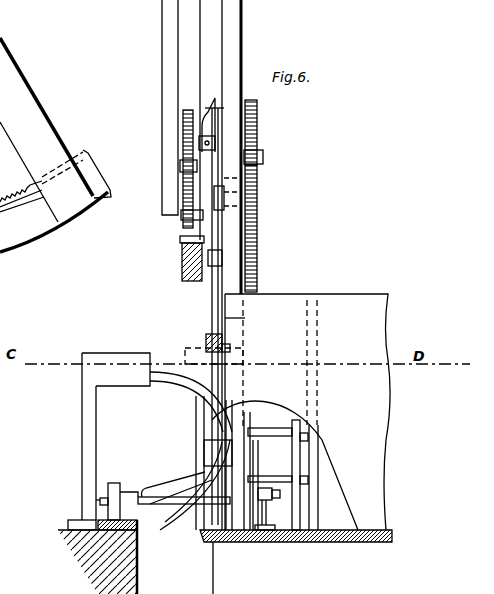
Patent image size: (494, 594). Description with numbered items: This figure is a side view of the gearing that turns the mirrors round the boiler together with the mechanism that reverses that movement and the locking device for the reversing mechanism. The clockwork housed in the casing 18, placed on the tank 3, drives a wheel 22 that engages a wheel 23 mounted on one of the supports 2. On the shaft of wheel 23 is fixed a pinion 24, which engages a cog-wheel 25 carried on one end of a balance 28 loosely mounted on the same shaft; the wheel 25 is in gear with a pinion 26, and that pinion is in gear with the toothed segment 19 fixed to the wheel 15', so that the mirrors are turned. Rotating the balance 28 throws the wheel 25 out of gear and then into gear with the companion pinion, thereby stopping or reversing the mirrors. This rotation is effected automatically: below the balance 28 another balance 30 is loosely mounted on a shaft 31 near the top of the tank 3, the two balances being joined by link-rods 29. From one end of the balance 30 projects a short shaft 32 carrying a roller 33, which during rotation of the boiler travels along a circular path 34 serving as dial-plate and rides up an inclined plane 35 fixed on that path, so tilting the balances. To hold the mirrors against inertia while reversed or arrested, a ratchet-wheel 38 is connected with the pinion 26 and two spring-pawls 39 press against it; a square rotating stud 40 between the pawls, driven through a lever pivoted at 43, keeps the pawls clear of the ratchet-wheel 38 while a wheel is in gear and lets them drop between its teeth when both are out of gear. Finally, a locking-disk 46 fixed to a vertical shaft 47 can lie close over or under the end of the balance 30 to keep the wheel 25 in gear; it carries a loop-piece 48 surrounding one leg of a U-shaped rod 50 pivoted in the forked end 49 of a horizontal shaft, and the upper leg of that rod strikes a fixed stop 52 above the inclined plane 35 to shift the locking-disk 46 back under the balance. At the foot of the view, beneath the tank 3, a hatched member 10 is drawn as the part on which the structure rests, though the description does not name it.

The support 2 is at (201, 265).
The tank 3 is at (233, 568).
The ground plate 10 is at (300, 541).
The wheel 15' is at (101, 159).
The casing 18 is at (307, 412).
The toothed segment 19 is at (182, 243).
The wheel 22 is at (257, 252).
The wheel 23 is at (257, 122).
The pinion 24 is at (180, 165).
The wheel 25 is at (183, 121).
The pinion 26 is at (184, 222).
The balance 28 is at (200, 150).
The link-rod 29 is at (212, 313).
The balance 30 is at (205, 450).
The shaft 31 is at (276, 480).
The short shaft 32 is at (175, 496).
The roller 33 is at (120, 488).
The circular path 34 is at (140, 527).
The inclined plane 35 is at (104, 496).
The ratchet-wheel 38 is at (229, 194).
The spring-pawl 39 is at (222, 258).
The rotating stud 40 is at (222, 345).
The pivot 43 is at (232, 348).
The locking-disk 46 is at (267, 495).
The vertical shaft 47 is at (276, 518).
The loop-piece 48 is at (237, 465).
The forked end 49 is at (255, 432).
The U-shaped rod 50 is at (186, 380).
The stop 52 is at (109, 441).